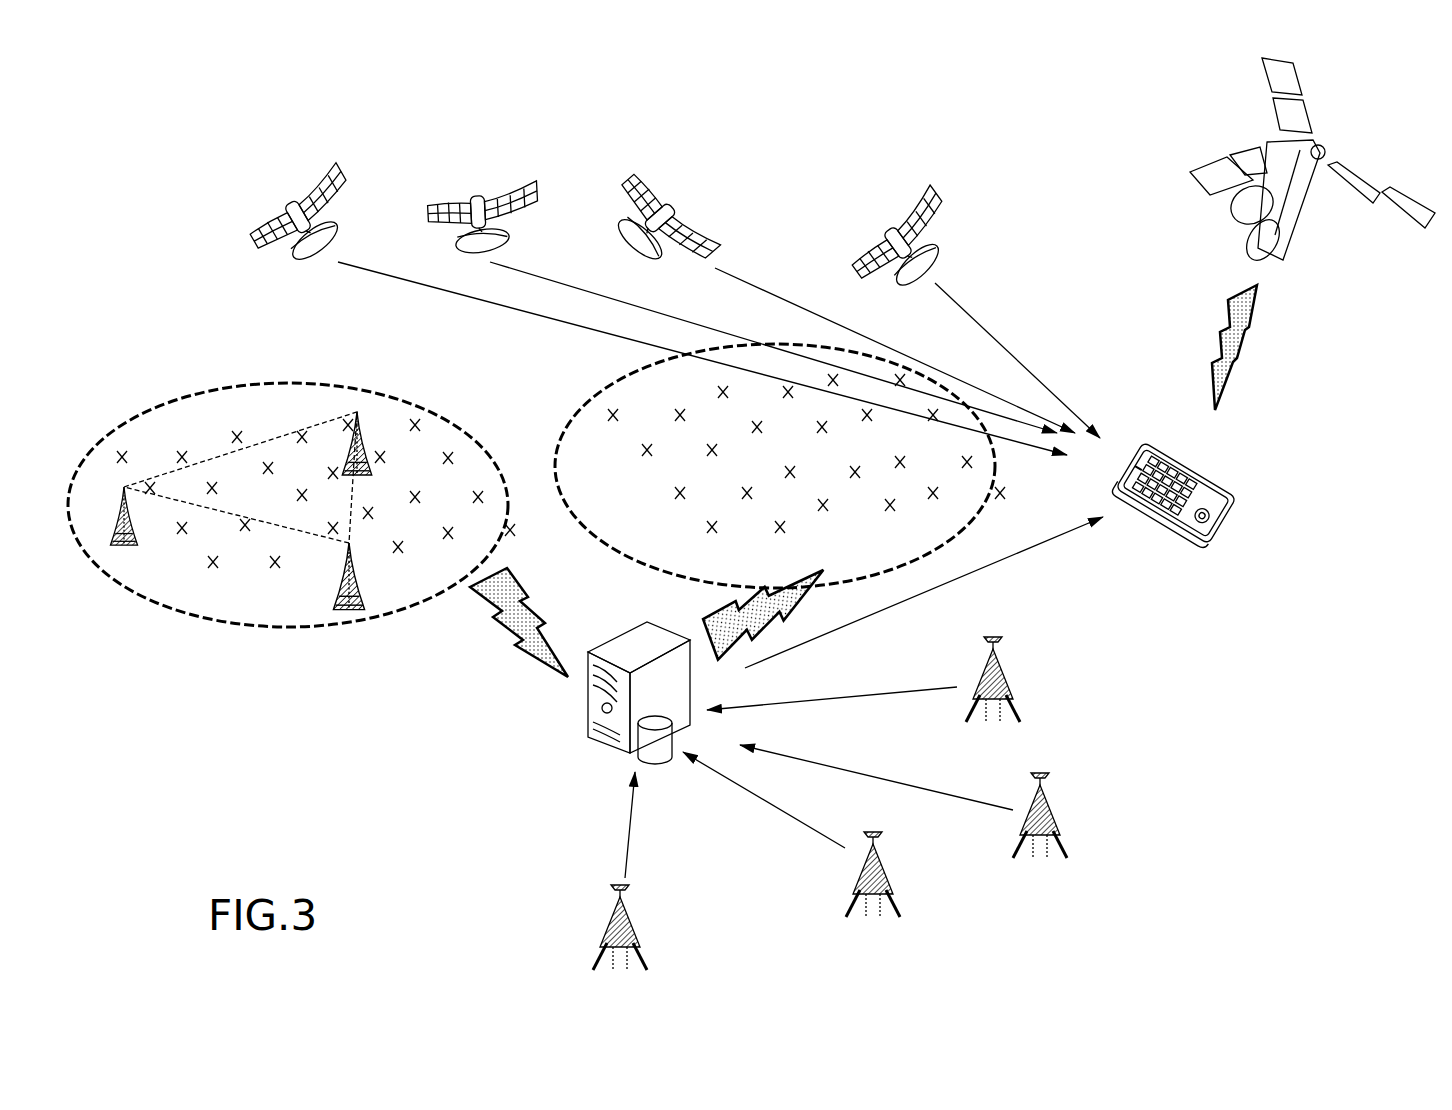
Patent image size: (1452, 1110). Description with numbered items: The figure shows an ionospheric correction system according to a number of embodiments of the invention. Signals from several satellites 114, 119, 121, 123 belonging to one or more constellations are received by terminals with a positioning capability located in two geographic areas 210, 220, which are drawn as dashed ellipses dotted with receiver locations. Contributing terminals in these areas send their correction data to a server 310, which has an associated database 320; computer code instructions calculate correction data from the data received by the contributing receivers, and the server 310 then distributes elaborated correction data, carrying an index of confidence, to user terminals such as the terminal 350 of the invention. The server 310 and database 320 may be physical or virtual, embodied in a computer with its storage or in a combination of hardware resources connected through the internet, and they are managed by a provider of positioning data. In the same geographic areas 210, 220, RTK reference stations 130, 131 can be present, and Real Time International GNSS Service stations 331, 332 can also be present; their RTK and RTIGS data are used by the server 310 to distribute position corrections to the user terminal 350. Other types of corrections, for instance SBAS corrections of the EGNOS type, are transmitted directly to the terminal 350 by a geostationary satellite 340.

The satellite 123 is at (291, 205).
The satellite 119 is at (478, 196).
The satellite 114 is at (670, 212).
The satellite 121 is at (898, 228).
The geostationary satellite 340 is at (1217, 223).
The geographic area 220 is at (252, 384).
The geographic area 210 is at (608, 370).
The user terminal 350 is at (1228, 535).
The server 310 is at (588, 717).
The database 320 is at (642, 757).
The RTIGS station 332 is at (1022, 687).
The RTIGS station 331 is at (1065, 823).
The RTK reference station 131 is at (905, 898).
The RTK reference station 130 is at (652, 950).